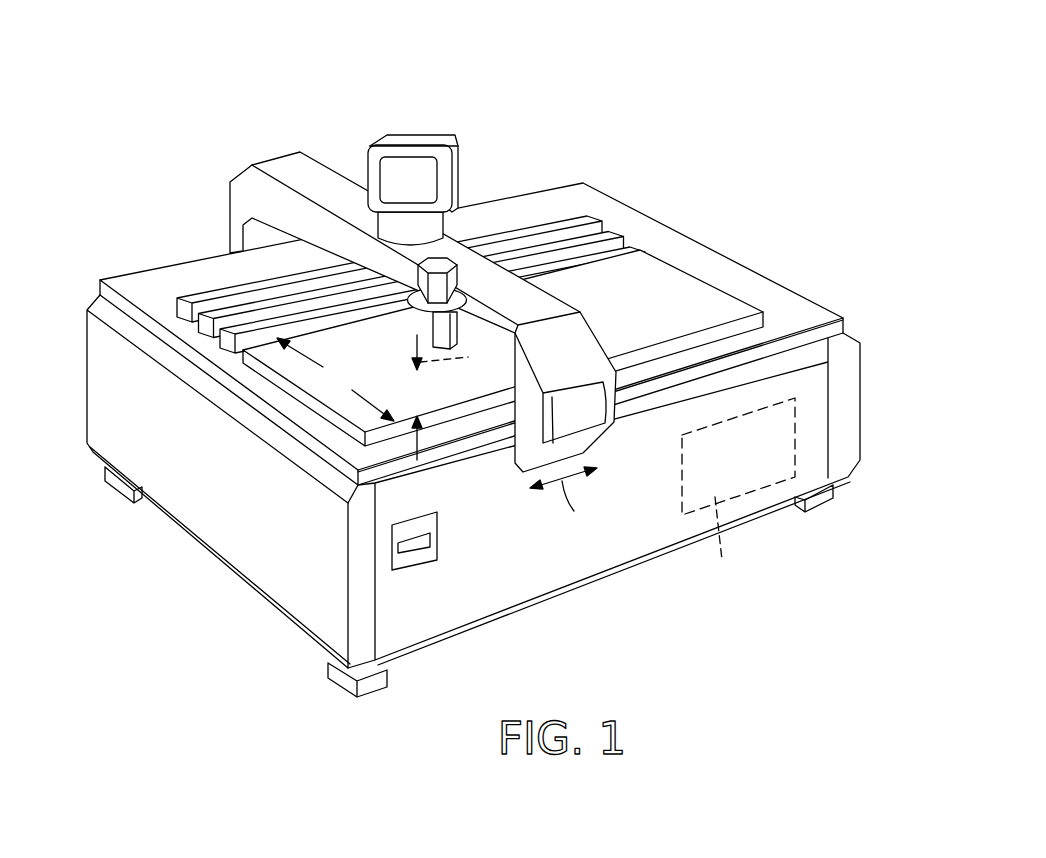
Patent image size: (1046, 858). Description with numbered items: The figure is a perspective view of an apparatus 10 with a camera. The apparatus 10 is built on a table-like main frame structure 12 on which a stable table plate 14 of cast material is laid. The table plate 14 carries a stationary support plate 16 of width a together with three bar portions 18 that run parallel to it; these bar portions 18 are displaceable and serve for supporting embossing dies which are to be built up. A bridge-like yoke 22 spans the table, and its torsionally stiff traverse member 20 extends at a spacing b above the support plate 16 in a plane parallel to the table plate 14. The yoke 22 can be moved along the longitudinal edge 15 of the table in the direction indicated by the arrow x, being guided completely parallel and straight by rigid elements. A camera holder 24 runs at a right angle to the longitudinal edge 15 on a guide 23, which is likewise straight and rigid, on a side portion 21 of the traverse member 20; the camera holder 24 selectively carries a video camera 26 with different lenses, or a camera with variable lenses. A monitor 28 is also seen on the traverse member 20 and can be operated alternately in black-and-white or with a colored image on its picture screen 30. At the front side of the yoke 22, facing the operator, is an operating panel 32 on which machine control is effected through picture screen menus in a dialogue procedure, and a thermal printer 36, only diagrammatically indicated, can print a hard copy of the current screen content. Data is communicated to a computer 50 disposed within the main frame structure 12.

The apparatus 10 is at (473, 377).
The main frame structure 12 is at (280, 598).
The table plate 14 is at (790, 302).
The longitudinal edge 15 is at (477, 442).
The stationary support plate 16 is at (707, 298).
The bar portions 18 is at (628, 243).
The traverse member 20 is at (310, 163).
The side portion 21 is at (337, 268).
The yoke 22 is at (389, 275).
The guide 23 is at (458, 346).
The camera holder 24 is at (440, 331).
The video camera 26 is at (443, 263).
The monitor 28 is at (413, 158).
The picture screen 30 is at (425, 163).
The operating panel 32 is at (605, 427).
The thermal printer 36 is at (413, 553).
The computer 50 is at (779, 478).